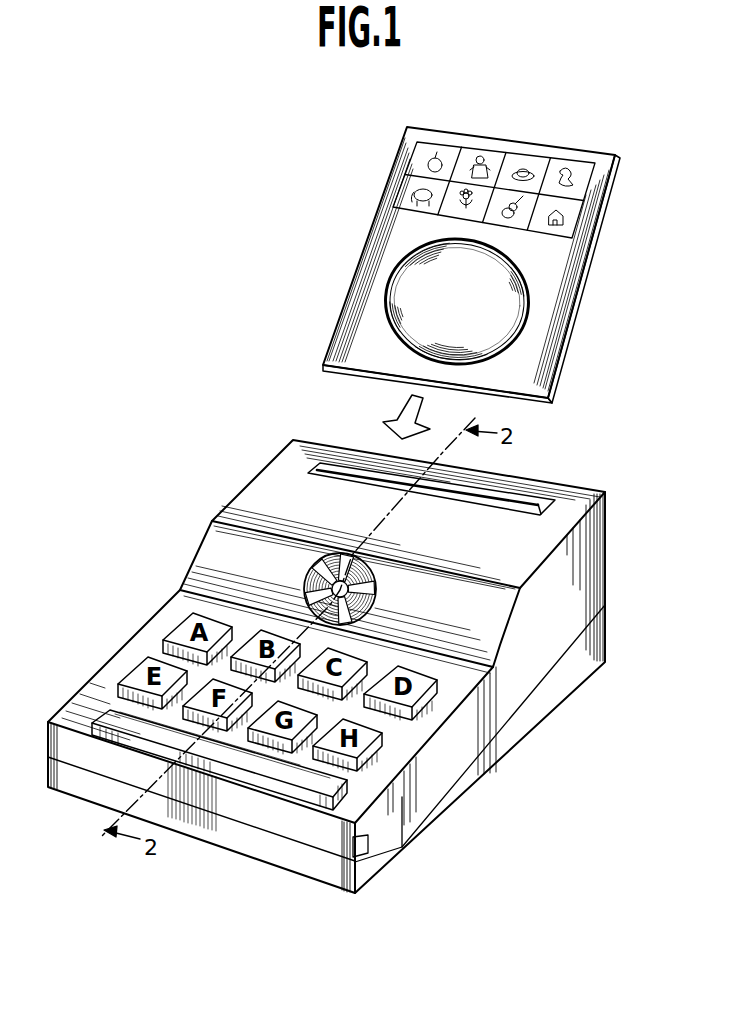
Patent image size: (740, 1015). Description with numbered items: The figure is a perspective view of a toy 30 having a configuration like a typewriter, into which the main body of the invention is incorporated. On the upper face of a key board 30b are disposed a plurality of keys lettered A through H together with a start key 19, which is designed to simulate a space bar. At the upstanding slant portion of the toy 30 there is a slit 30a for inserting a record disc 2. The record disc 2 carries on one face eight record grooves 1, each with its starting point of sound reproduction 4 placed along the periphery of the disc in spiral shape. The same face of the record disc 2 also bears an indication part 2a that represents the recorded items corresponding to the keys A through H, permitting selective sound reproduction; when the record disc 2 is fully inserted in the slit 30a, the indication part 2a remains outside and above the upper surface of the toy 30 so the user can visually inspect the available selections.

The record grooves 1 is at (425, 290).
The record disc 2 is at (550, 328).
The indication part 2a is at (592, 185).
The starting point of sound reproduction 4 is at (502, 295).
The start key 19 is at (118, 723).
The toy 30 is at (605, 570).
The slit 30a is at (527, 505).
The key board 30b is at (457, 712).